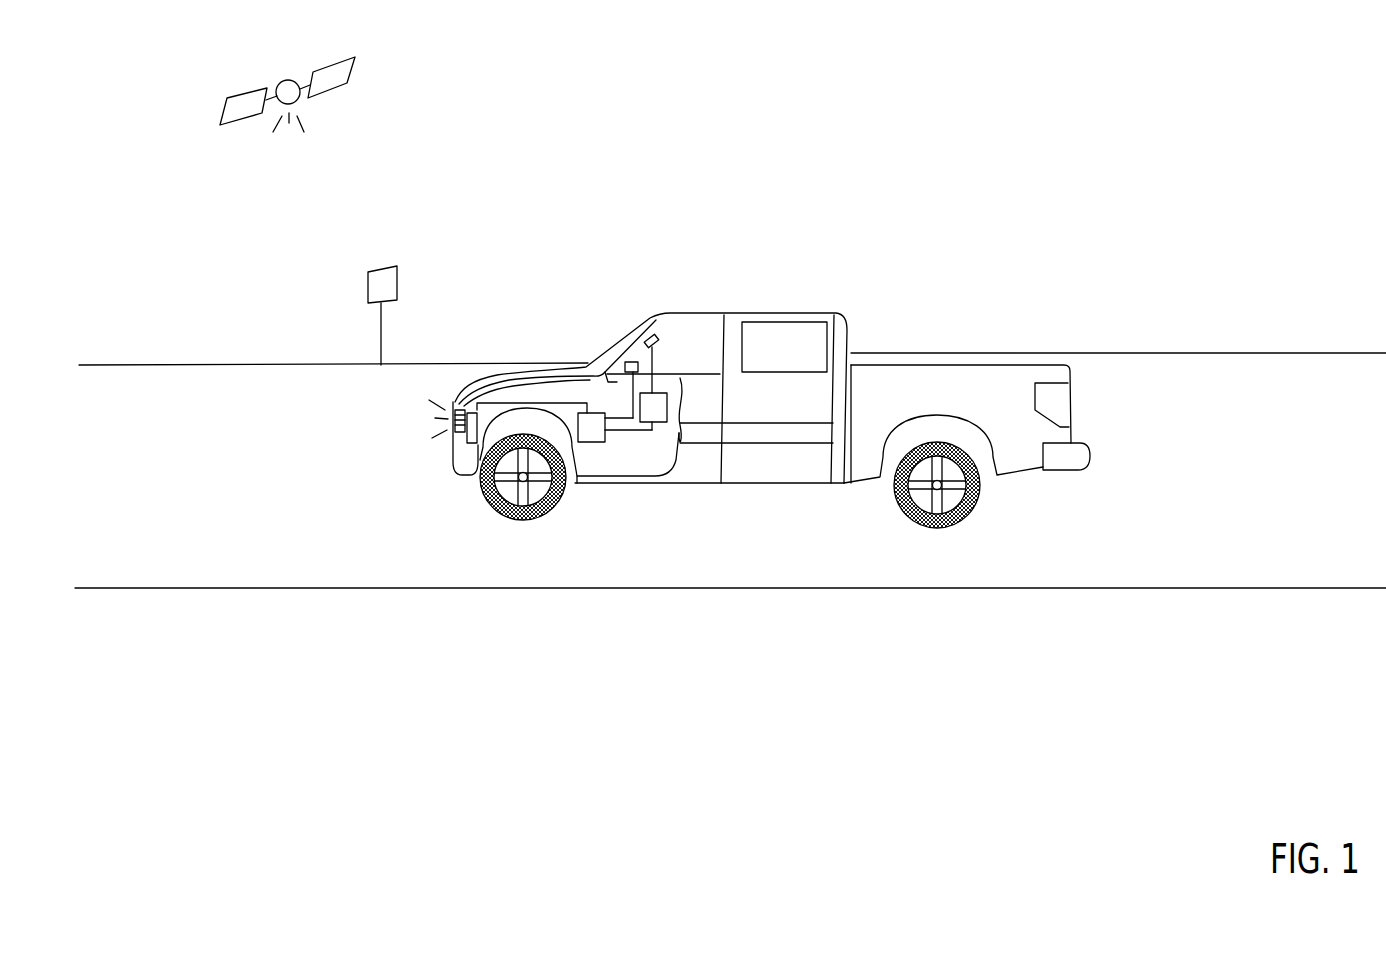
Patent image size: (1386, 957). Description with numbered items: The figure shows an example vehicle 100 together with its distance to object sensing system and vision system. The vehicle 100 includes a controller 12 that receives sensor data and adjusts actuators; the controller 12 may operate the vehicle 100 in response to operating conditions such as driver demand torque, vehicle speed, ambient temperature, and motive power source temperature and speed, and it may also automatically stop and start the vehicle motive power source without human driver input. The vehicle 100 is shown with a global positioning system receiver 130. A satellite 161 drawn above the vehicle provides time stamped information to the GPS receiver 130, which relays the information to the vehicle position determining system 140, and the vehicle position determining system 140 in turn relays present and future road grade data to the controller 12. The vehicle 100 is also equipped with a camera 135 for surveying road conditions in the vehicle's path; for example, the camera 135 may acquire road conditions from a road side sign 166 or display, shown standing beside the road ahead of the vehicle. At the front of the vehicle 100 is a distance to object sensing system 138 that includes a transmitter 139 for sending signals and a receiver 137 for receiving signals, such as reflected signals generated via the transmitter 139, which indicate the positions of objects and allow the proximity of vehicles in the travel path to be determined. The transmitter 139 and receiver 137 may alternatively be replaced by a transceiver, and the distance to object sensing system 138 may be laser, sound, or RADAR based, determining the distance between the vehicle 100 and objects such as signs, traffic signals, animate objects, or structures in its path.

The vehicle 100 is at (1003, 475).
The controller 12 is at (591, 443).
The global positioning system (GPS) receiver 130 is at (658, 340).
The camera 135 is at (631, 362).
The receiver 137 is at (453, 432).
The distance to object sensing system 138 is at (470, 425).
The transmitter 139 is at (456, 408).
The vehicle position determining system 140 is at (655, 422).
The satellite 161 is at (273, 83).
The road side sign 166 is at (367, 290).